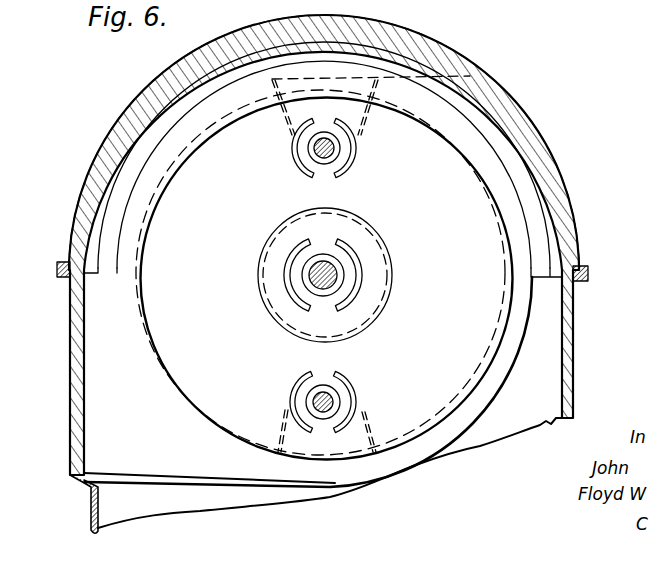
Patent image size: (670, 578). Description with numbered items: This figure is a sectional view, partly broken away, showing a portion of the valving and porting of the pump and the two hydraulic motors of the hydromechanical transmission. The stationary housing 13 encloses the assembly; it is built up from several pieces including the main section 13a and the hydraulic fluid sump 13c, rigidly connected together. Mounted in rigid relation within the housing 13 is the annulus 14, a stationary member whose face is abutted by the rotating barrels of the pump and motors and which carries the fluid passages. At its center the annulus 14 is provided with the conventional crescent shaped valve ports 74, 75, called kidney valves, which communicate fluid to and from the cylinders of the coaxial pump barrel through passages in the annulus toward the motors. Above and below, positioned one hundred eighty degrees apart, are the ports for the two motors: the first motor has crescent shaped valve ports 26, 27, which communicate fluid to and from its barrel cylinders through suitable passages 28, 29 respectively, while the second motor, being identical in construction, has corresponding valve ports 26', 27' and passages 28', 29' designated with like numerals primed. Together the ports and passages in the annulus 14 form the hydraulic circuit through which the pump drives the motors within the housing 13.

The housing 13 is at (550, 144).
The main section 13a is at (570, 222).
The hydraulic fluid sump 13c is at (89, 496).
The annulus 14 is at (436, 211).
The valve port 26 is at (365, 149).
The valve port 27 is at (280, 154).
The passage 28 is at (371, 110).
The passage 29 is at (261, 115).
The valve port 26' is at (370, 397).
The valve port 27' is at (278, 401).
The passage 28' is at (390, 423).
The passage 29' is at (266, 424).
The valve port 74 is at (357, 261).
The valve port 75 is at (292, 249).